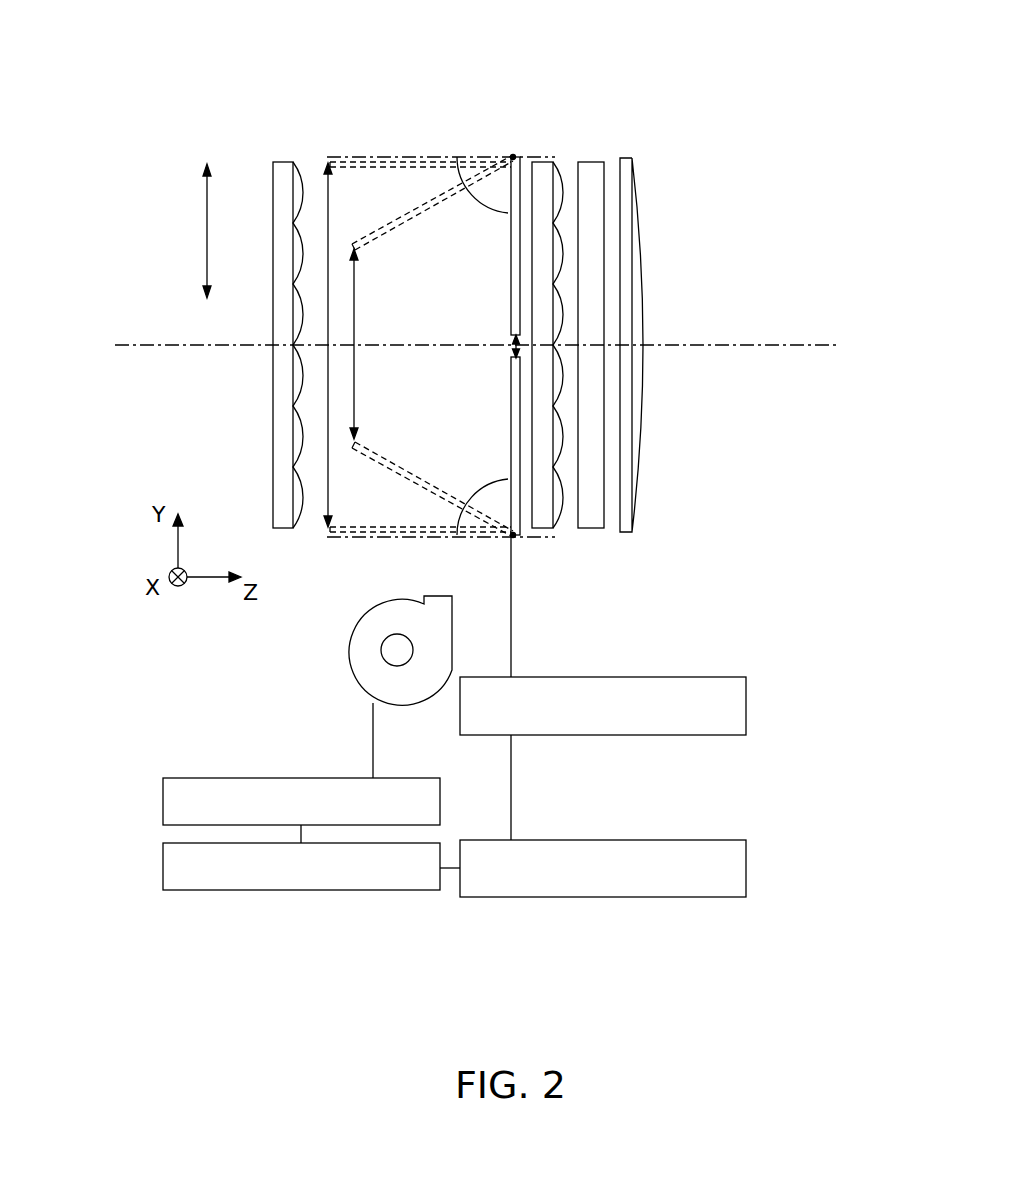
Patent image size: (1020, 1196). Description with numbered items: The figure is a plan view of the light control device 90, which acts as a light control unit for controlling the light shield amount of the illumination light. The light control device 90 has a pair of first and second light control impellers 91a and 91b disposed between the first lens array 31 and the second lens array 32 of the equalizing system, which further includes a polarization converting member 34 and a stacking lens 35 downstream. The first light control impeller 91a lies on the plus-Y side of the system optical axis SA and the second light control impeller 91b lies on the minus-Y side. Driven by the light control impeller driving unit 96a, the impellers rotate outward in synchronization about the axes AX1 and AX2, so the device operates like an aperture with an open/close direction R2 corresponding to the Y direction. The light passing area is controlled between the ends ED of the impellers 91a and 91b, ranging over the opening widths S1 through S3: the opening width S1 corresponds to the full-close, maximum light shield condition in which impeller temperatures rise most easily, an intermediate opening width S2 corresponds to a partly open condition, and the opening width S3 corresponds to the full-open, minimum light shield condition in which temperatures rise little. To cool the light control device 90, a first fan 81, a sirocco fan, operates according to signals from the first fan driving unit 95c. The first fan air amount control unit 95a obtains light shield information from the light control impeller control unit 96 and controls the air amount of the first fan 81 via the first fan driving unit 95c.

The light control device 90 is at (379, 71).
The first lens array 31 is at (281, 161).
The second lens array 32 is at (540, 161).
The polarization converting member 34 is at (594, 529).
The stacking lens 35 is at (625, 157).
The first fan 81 is at (358, 671).
The first light control impeller 91a is at (355, 161).
The second light control impeller 91b is at (373, 538).
The first fan air amount control unit 95a is at (163, 867).
The first fan driving unit 95c is at (163, 801).
The light control impeller control unit 96 is at (746, 857).
The light control impeller driving unit 96a is at (746, 694).
The rotation axis of first light control impeller AX1 is at (513, 155).
The rotation axis of second light control impeller AX2 is at (512, 537).
The system optical axis SA is at (790, 344).
The open/close direction R2 is at (206, 199).
The opening width in maximum light shield condition S1 is at (514, 347).
The opening width in open condition S2 is at (356, 302).
The opening width in minimum light shield condition S3 is at (330, 202).
The ends of light control impellers ED is at (333, 167).